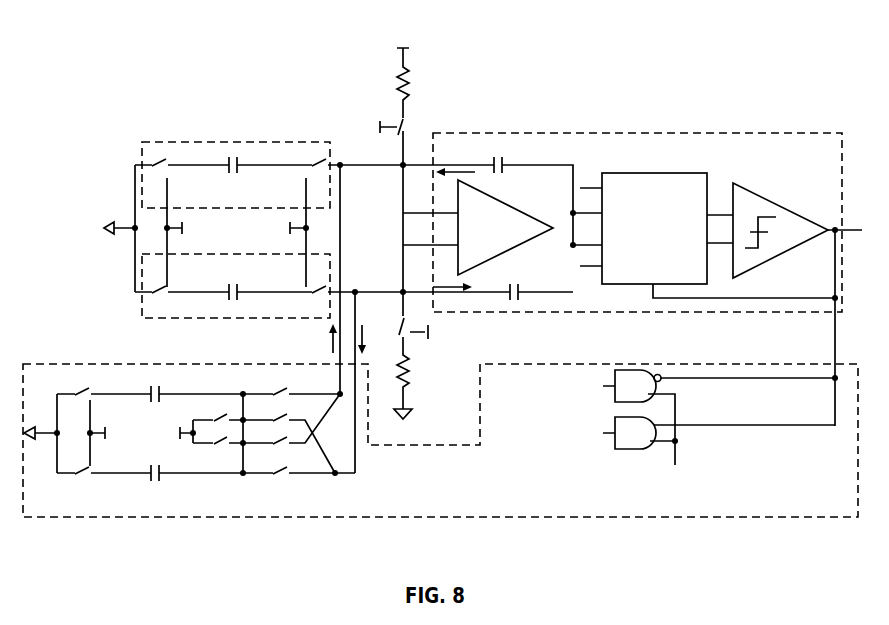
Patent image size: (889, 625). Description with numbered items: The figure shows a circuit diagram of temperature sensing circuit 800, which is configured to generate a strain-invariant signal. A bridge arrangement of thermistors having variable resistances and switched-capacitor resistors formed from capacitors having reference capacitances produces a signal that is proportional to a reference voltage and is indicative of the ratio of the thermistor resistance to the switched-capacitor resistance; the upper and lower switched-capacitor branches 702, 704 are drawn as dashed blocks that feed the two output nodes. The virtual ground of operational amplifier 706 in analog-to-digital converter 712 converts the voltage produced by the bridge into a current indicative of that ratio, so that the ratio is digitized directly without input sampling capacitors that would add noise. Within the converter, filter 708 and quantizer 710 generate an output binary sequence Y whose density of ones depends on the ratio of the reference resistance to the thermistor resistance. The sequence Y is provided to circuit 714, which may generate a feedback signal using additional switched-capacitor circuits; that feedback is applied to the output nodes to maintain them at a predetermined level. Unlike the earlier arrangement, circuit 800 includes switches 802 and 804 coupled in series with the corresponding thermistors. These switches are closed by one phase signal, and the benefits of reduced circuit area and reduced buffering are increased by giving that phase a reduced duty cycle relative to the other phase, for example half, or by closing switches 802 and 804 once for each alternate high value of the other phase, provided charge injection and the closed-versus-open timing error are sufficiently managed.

The circuit 800 is at (114, 53).
The first switched-capacitor reference branch 702 is at (158, 142).
The second switched-capacitor reference branch 704 is at (158, 310).
The operational amplifier 706 is at (507, 207).
The filter 708 is at (640, 267).
The quantizer 710 is at (790, 210).
The analog-to-digital converter 712 is at (707, 133).
The circuit 714 is at (79, 364).
The switch 802 is at (406, 124).
The switch 804 is at (400, 328).